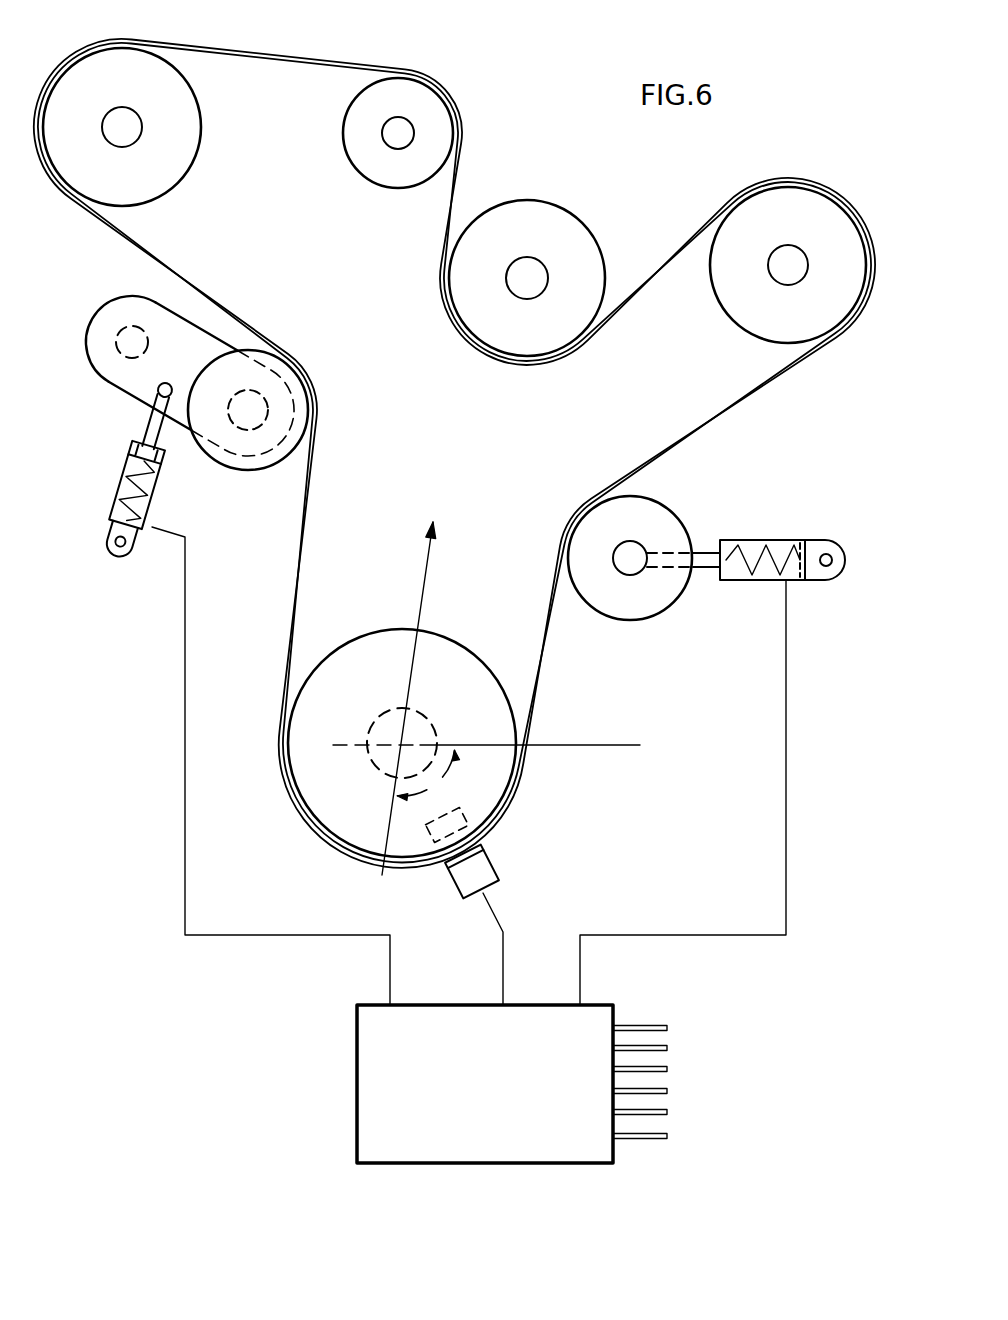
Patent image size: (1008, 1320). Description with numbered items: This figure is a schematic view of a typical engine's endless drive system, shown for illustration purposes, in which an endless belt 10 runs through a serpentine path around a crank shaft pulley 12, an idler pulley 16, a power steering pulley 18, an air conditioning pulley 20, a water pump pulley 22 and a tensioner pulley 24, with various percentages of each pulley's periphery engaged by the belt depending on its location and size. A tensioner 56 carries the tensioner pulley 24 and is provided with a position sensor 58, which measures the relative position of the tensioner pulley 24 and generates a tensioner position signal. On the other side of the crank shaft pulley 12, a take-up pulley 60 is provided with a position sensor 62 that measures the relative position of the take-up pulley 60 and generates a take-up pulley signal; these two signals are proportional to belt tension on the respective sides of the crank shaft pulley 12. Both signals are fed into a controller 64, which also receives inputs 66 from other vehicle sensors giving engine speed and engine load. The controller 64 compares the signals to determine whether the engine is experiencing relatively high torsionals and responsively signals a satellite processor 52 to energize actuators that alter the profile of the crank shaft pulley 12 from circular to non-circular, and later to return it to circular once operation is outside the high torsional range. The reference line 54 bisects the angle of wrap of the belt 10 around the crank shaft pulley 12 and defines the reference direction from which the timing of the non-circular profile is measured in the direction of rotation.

The endless belt 10 is at (540, 668).
The crank shaft pulley 12 is at (372, 627).
The idler pulley 16 is at (360, 162).
The power steering pulley 18 is at (185, 148).
The air conditioning pulley 20 is at (752, 318).
The water pump pulley 22 is at (575, 233).
The tensioner pulley 24 is at (279, 455).
The satellite processor 52 is at (483, 867).
The reference direction line 54 is at (428, 580).
The tensioner 56 is at (118, 380).
The position sensor 58 is at (112, 508).
The take-up pulley 60 is at (660, 605).
The position sensor 62 is at (790, 540).
The controller 64 is at (492, 1102).
The inputs 66 is at (670, 1043).